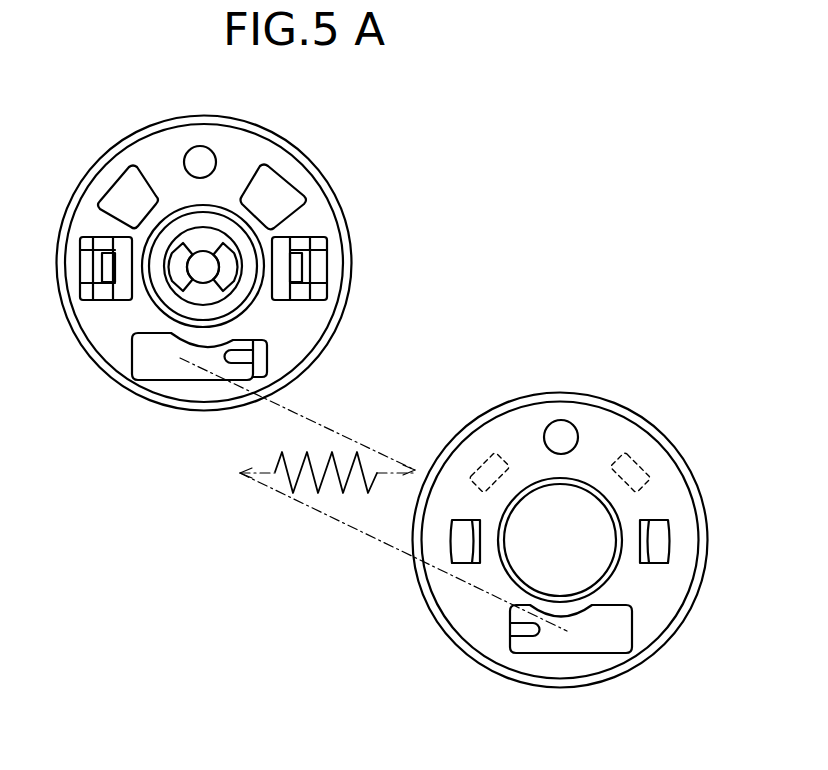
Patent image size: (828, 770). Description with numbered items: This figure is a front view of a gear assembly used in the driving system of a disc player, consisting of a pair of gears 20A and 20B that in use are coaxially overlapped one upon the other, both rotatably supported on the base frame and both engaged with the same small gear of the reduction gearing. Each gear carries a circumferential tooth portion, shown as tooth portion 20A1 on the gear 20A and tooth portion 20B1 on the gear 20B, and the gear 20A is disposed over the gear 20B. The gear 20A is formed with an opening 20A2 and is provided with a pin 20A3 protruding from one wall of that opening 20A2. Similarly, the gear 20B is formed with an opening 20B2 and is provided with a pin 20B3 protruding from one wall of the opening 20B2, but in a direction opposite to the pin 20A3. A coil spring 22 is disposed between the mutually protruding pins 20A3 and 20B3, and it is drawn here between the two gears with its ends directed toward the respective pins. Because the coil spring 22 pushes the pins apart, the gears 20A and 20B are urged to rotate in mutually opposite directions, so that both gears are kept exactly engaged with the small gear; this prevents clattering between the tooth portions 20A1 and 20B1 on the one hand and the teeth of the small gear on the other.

The gear 20A is at (579, 548).
The circumferential tooth portion 20A1 is at (682, 622).
The opening 20A2 is at (615, 638).
The pin 20A3 is at (523, 632).
The gear 20B is at (229, 286).
The circumferential tooth portion 20B1 is at (321, 180).
The opening 20B2 is at (150, 370).
The pin 20B3 is at (238, 367).
The coil spring 22 is at (306, 490).